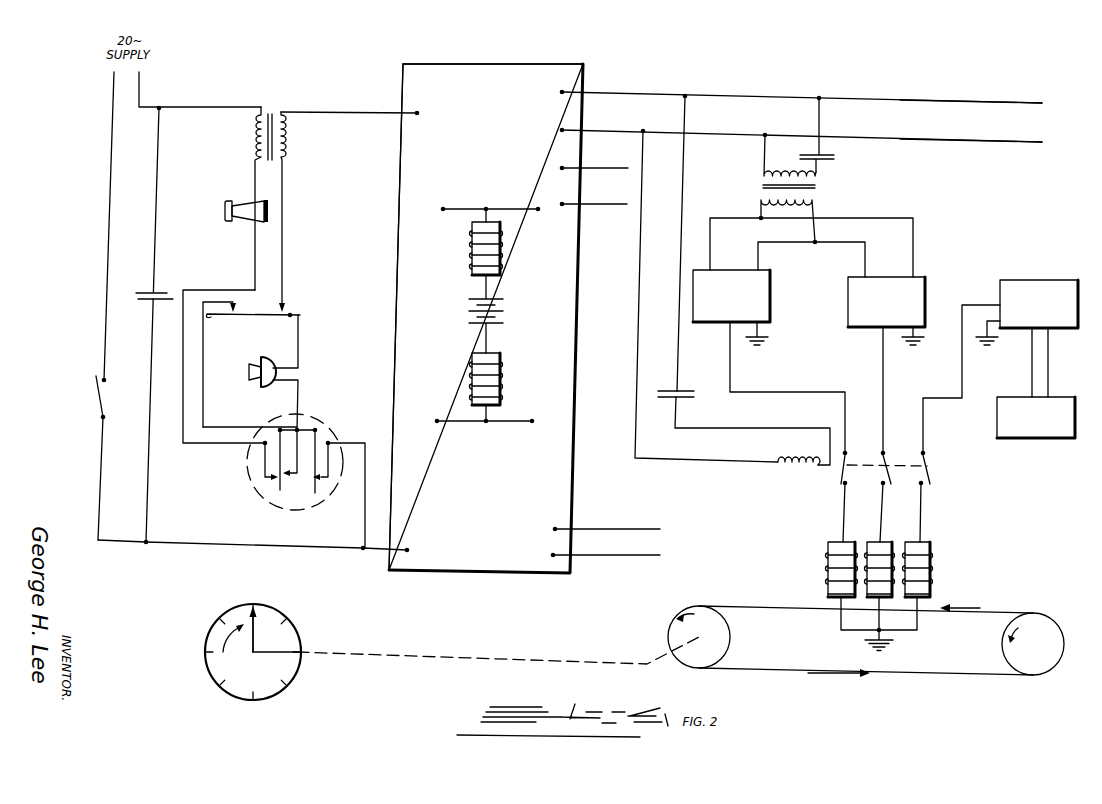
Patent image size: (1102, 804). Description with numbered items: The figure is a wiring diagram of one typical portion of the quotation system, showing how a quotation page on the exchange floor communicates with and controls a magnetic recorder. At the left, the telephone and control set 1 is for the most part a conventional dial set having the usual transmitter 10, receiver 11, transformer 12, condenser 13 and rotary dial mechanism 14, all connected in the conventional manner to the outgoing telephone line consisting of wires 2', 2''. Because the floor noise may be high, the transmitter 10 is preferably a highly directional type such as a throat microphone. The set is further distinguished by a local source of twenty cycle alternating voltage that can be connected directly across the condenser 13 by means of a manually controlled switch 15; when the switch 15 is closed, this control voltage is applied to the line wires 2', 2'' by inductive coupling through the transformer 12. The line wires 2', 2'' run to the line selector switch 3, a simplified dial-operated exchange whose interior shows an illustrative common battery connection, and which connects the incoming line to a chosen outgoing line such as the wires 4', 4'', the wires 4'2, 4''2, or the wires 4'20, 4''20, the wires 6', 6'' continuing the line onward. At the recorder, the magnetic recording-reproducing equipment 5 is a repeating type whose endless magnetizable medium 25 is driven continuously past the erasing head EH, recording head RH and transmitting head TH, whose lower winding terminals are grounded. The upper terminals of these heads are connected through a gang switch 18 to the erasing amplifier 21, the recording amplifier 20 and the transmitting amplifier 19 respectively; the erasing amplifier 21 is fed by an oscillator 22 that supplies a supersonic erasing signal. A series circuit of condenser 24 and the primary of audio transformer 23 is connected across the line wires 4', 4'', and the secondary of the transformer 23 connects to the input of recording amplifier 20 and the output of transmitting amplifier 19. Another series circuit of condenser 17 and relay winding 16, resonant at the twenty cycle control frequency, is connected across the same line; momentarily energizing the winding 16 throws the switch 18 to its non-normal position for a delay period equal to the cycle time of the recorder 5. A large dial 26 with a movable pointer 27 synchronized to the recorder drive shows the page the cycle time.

The telephone and control set 1 is at (352, 248).
The wire of telephone line 2 2' is at (350, 103).
The wire of telephone line 2 2'' is at (377, 560).
The line selector switch 3 is at (490, 64).
The wire of telephone line 4 4' is at (802, 90).
The wire of telephone line 4 4'' is at (802, 128).
The wire of line 4_2 4'2 is at (595, 159).
The wire of line 4_2 4''2 is at (594, 195).
The wire of line 4_20 4'20 is at (607, 523).
The wire of line 4_20 4''20 is at (606, 567).
The magnetic recording-reproducing equipment 5 is at (950, 649).
The line wire 6' is at (971, 94).
The line wire 6'' is at (971, 132).
The transmitter 10 is at (248, 371).
The receiver 11 is at (226, 208).
The transformer 12 is at (291, 137).
The condenser 13 is at (141, 292).
The rotary dial mechanism 14 is at (327, 426).
The switch 15 is at (106, 397).
The relay winding 16 is at (804, 471).
The condenser 17 is at (688, 390).
The gang switch 18 is at (925, 453).
The transmitting amplifier 19 is at (750, 270).
The recording amplifier 20 is at (904, 277).
The erasing amplifier 21 is at (1050, 280).
The oscillator 22 is at (1064, 397).
The audio transformer 23 is at (760, 186).
The condenser 24 is at (836, 157).
The endless magnetizable medium 25 is at (993, 613).
The dial 26 is at (208, 634).
The movable pointer 27 is at (260, 624).
The transmitting head TH is at (830, 545).
The recording head RH is at (893, 542).
The erasing head EH is at (933, 545).